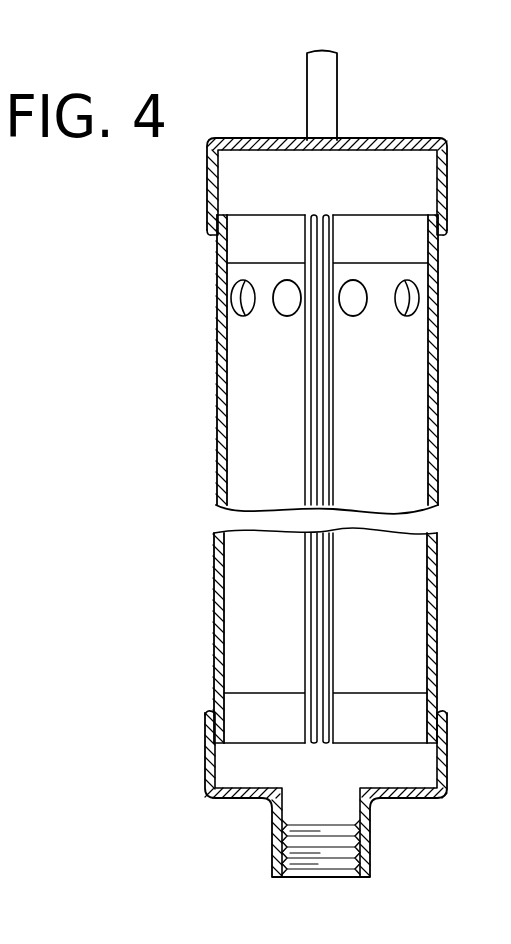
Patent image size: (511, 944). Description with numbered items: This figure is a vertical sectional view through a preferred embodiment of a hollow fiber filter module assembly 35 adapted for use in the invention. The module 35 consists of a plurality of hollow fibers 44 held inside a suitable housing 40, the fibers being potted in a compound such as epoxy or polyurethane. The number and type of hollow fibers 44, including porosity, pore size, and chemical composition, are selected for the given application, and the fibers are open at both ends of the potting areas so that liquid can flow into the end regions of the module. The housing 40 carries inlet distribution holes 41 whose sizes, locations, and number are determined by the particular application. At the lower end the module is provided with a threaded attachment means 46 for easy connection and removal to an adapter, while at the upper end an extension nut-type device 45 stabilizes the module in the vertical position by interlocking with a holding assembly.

The hollow fiber filter assembly 35 is at (361, 479).
The housing 40 is at (433, 398).
The inlet distribution holes 41 is at (415, 303).
The hollow fibers 44 is at (333, 418).
The extension nut-type device 45 is at (327, 98).
The attachment means 46 is at (368, 850).